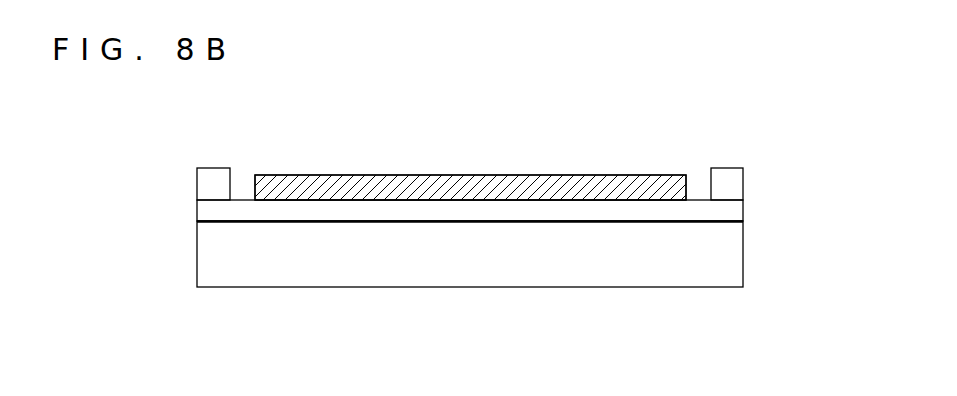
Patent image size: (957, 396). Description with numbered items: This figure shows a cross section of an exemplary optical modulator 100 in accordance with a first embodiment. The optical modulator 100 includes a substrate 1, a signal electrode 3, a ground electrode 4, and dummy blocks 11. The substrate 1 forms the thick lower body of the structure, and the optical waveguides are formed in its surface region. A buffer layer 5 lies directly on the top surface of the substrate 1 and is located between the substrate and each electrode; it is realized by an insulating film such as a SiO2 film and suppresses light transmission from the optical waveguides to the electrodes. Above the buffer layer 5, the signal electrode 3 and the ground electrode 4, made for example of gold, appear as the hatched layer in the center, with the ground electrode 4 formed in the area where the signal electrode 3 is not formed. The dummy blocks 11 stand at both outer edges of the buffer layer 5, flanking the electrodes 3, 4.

The optical modulator 100 is at (610, 95).
The substrate 1 is at (744, 254).
The buffer layer 5 is at (744, 211).
The dummy blocks 11 is at (197, 183).
The signal electrode 3 is at (470, 175).
The ground electrode 4 is at (470, 187).